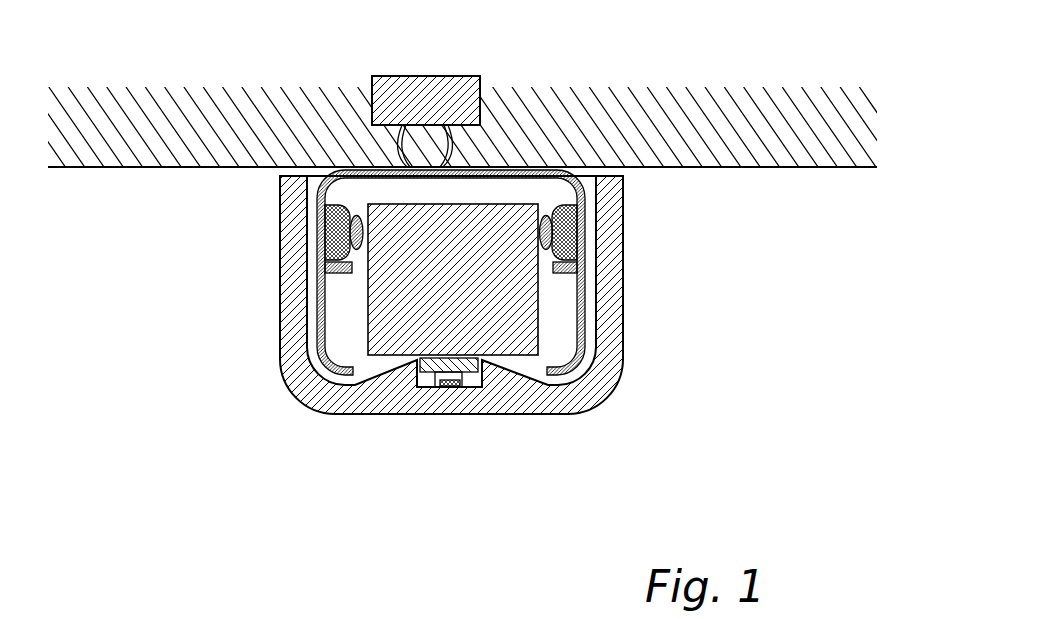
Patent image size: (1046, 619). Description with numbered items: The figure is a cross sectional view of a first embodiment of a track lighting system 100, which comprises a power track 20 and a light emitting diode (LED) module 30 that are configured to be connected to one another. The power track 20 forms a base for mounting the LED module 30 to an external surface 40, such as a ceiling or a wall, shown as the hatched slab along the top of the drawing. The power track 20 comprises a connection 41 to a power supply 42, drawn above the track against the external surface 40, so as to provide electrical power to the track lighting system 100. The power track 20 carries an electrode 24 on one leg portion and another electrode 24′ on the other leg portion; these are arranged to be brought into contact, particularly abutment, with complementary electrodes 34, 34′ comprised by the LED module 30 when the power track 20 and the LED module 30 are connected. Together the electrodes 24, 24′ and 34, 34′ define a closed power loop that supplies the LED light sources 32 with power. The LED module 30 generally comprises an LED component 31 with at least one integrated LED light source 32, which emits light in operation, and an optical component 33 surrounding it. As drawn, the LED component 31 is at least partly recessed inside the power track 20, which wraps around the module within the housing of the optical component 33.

The track lighting system 100 is at (100, 244).
The external surface 40 is at (642, 167).
The connection 41 is at (453, 148).
The power supply 42 is at (445, 76).
The LED module 30 is at (457, 338).
The optical component 33 is at (568, 400).
The LED component 31 is at (508, 343).
The LED light source 32 is at (440, 384).
The power track 20 is at (582, 337).
The electrode 24 is at (345, 220).
The electrode 24′ is at (560, 221).
The electrode 34 is at (333, 253).
The electrode 34′ is at (565, 245).